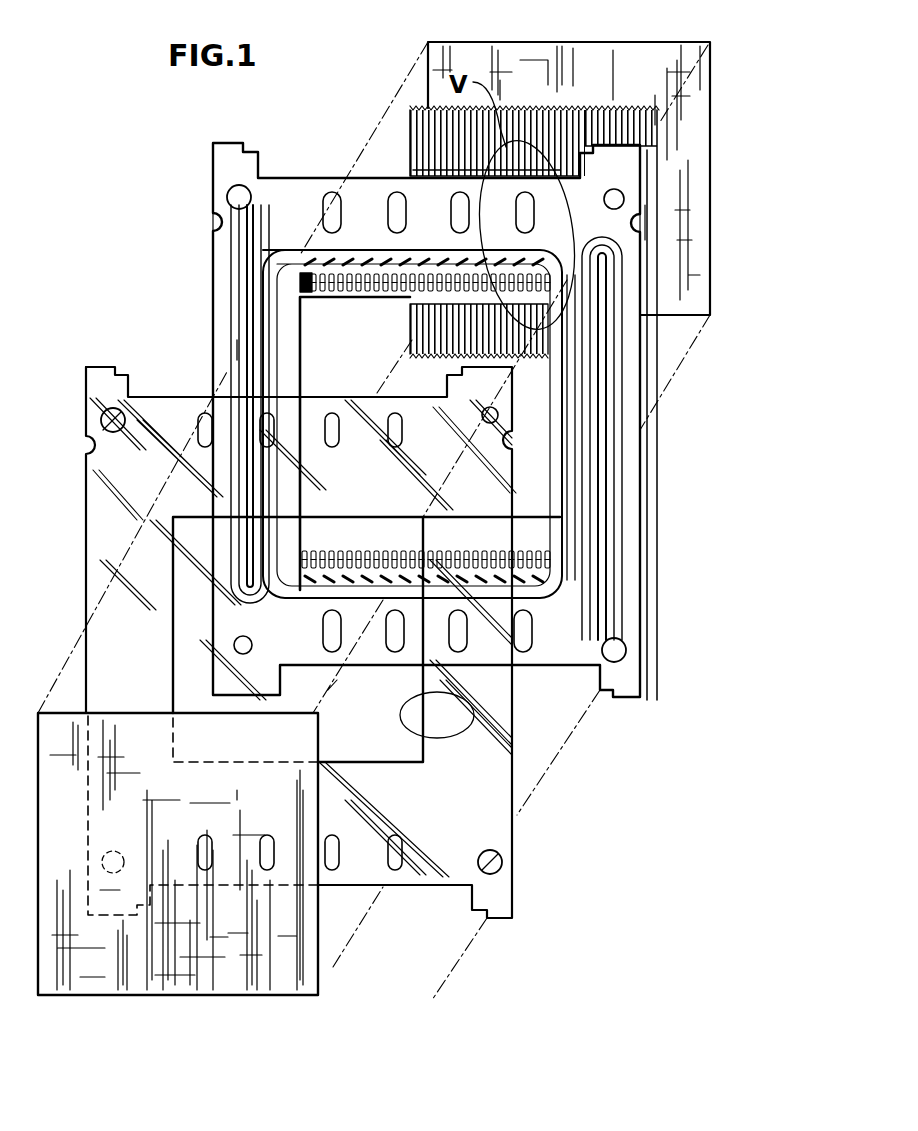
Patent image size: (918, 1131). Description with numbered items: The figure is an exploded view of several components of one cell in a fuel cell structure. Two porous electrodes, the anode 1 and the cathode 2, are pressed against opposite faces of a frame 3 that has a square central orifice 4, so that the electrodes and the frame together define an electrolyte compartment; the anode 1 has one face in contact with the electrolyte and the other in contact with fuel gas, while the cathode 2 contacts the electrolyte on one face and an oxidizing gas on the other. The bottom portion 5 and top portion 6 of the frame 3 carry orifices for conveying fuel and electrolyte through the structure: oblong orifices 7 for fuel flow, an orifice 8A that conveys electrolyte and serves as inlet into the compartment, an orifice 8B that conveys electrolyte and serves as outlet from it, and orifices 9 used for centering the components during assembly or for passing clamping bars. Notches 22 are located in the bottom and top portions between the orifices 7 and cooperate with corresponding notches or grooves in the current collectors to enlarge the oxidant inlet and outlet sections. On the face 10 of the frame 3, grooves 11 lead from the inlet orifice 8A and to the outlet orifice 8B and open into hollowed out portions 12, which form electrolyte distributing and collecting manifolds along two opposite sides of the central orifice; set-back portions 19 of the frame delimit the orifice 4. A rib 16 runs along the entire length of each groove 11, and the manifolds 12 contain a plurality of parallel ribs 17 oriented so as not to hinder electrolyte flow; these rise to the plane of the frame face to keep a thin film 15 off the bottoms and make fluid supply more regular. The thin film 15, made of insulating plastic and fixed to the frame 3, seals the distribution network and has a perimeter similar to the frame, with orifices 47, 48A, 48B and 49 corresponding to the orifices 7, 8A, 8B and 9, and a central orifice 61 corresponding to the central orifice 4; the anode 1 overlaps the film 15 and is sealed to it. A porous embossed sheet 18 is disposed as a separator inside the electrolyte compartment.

The anode 1 is at (282, 958).
The cathode 2 is at (527, 62).
The frame 3 is at (200, 210).
The central orifice 4 is at (533, 437).
The bottom portion 5 is at (277, 616).
The top portion 6 is at (303, 214).
The orifices for fuel flow 7 is at (331, 218).
The electrolyte inlet orifice 8A is at (232, 192).
The electrolyte outlet orifice 8B is at (624, 652).
The centering orifices 9 is at (622, 200).
The face of the frame 10 is at (212, 254).
The grooves 11 is at (250, 312).
The hollowed out portions 12 is at (319, 286).
The thin film 15 is at (167, 420).
The rib 16 is at (237, 347).
The ribs 17 is at (341, 282).
The porous embossed sheet 18 is at (445, 130).
The set-back portions 19 is at (558, 397).
The notches 22 is at (435, 172).
The orifices 47 is at (393, 442).
The orifice 48A is at (102, 425).
The orifice 48B is at (500, 868).
The orifices 49 is at (498, 416).
The central orifice 61 is at (450, 729).